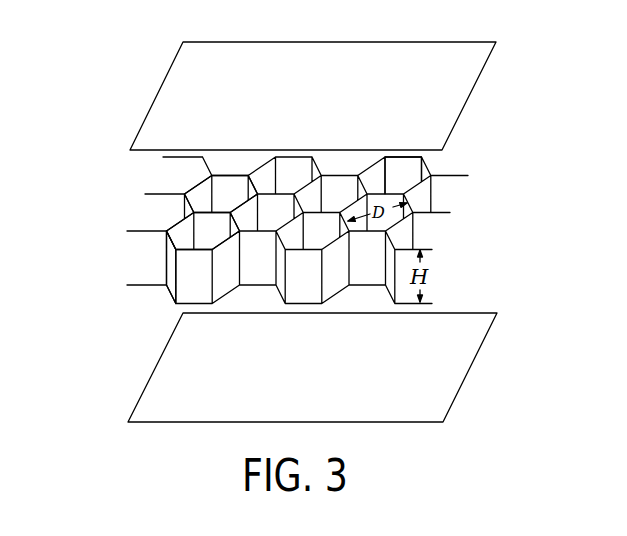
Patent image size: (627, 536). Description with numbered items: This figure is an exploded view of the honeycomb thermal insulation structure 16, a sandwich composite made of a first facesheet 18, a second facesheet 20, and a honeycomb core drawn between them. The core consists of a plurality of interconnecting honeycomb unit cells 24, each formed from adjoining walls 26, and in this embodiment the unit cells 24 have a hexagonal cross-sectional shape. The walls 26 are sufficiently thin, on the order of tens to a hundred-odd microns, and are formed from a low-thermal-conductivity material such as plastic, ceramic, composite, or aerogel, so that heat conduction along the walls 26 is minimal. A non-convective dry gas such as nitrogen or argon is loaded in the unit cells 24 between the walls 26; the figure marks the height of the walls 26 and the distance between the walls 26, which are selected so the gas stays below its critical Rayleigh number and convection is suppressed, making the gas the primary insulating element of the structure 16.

The honeycomb thermal insulation structure 16 is at (344, 222).
The first facesheet 18 is at (438, 57).
The second facesheet 20 is at (437, 386).
The honeycomb unit cells 24 is at (223, 193).
The walls 26 is at (197, 275).